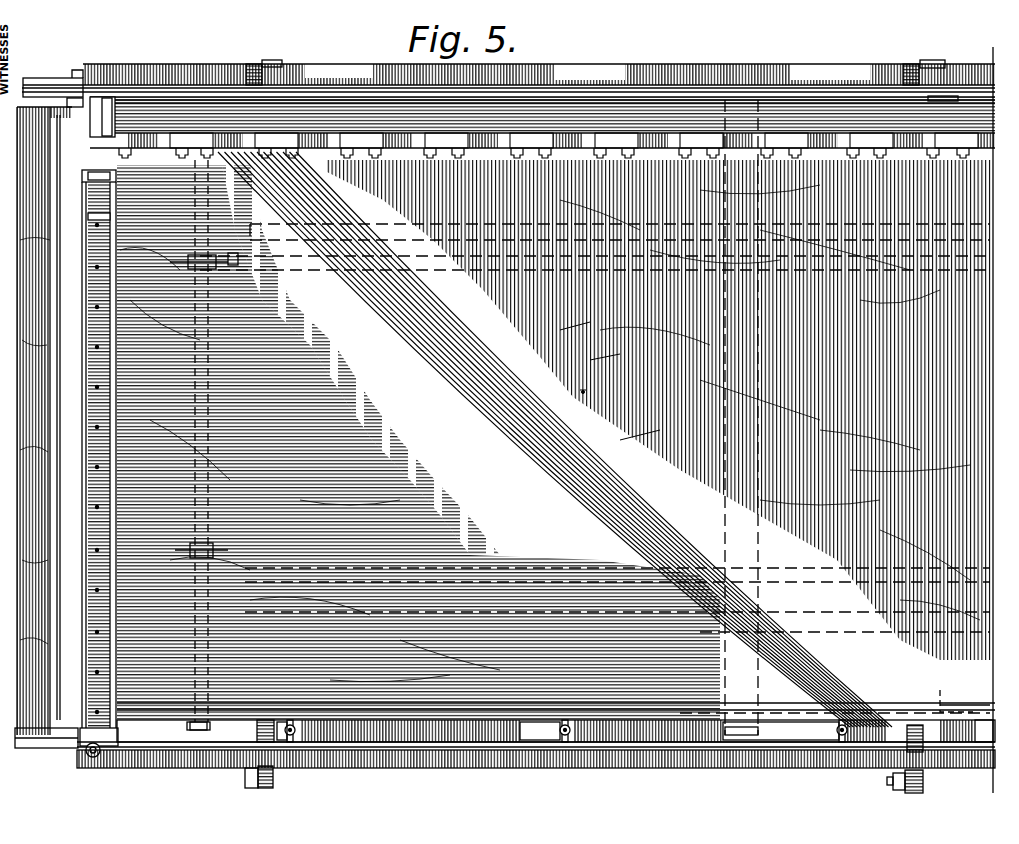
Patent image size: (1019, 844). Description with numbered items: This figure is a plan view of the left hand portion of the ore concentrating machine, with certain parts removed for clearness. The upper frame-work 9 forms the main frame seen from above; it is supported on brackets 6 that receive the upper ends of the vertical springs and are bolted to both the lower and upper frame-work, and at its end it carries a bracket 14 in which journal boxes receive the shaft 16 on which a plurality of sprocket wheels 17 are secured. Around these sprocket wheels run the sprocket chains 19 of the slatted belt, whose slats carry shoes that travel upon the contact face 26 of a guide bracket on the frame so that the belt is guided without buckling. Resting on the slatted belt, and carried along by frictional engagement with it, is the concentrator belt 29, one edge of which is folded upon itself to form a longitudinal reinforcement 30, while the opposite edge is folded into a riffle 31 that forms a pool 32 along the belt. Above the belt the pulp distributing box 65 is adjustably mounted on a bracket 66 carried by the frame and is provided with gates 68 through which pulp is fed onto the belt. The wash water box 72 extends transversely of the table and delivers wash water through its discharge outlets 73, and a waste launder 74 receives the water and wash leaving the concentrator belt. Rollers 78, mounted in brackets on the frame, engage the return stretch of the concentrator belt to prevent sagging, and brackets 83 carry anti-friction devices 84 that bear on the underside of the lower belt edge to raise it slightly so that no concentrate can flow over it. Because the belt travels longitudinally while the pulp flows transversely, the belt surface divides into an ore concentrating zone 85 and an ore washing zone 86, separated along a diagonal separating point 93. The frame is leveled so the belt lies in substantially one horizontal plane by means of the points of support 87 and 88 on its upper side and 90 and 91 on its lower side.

The brackets 6 is at (253, 773).
The upper frame-work 9 is at (262, 63).
The bracket 14 is at (37, 80).
The shaft 16 is at (210, 376).
The sprocket wheels 17 is at (217, 263).
The sprocket chains 19 is at (627, 271).
The contact face 26 is at (601, 213).
The concentrator belt 29 is at (921, 420).
The reinforcement 30 is at (62, 110).
The riffle 31 is at (972, 715).
The pool 32 is at (966, 710).
The pulp distributing box 65 is at (580, 127).
The bracket 66 is at (355, 92).
The gates 68 is at (174, 150).
The wash water box 72 is at (90, 363).
The discharge outlets 73 is at (95, 506).
The waste launder 74 is at (473, 727).
The rollers 78 is at (764, 370).
The brackets 83 is at (292, 722).
The anti-friction devices 84 is at (560, 729).
The ore concentrating zone 85 is at (610, 381).
The ore washing zone 86 is at (310, 465).
The point of support 87 is at (285, 56).
The point of support 88 is at (937, 66).
The point of support 90 is at (278, 773).
The point of support 91 is at (927, 778).
The diagonal separating point 93 is at (597, 460).